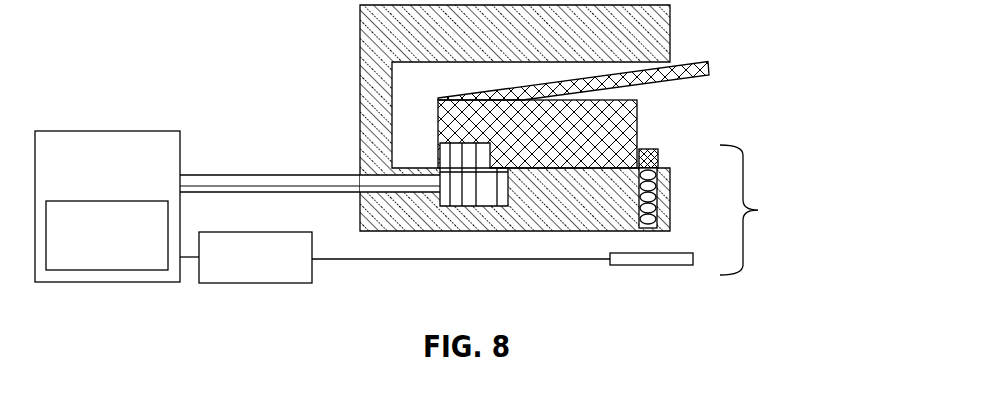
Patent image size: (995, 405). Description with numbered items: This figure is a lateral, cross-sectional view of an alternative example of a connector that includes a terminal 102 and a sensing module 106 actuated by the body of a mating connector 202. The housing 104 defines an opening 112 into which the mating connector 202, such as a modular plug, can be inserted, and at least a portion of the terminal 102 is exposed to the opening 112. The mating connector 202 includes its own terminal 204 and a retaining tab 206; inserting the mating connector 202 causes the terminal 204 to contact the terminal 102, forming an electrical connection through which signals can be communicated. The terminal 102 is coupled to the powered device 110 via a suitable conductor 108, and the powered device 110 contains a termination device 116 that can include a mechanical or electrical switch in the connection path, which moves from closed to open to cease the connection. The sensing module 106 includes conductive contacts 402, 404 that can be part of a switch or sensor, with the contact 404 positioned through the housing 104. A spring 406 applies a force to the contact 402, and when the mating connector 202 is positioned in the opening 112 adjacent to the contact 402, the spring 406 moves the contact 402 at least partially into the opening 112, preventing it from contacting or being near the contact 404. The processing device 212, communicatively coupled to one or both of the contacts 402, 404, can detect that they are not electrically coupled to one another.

The terminal 102 is at (452, 210).
The housing 104 is at (432, 52).
The sensing module 106 is at (763, 210).
The conductor 108 is at (197, 170).
The powered device 110 is at (107, 206).
The opening 112 is at (660, 128).
The termination device 116 is at (107, 235).
The mating connector 202 is at (628, 92).
The terminal 204 is at (429, 162).
The retaining tab 206 is at (717, 63).
The processing device 212 is at (395, 257).
The contact 402 is at (667, 153).
The contact 404 is at (641, 270).
The spring 406 is at (639, 217).